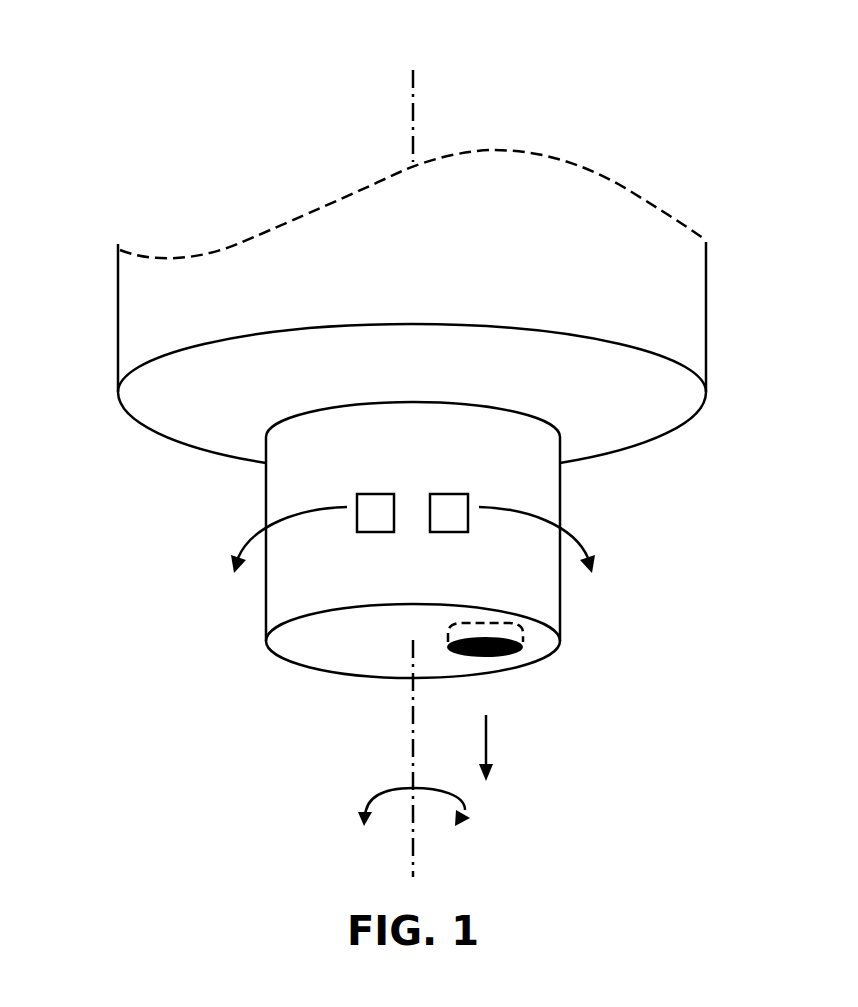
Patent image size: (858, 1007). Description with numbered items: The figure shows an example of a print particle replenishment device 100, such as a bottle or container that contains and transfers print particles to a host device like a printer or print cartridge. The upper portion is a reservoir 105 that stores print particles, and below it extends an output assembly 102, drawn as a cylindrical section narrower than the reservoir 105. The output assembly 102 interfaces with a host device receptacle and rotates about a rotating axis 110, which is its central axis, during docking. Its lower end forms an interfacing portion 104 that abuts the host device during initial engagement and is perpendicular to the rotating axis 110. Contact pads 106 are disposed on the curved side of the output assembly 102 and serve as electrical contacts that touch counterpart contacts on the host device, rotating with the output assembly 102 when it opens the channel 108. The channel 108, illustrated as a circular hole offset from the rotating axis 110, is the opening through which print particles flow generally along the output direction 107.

The print particle replenishment device 100 is at (158, 156).
The output assembly 102 is at (211, 678).
The interfacing portion 104 is at (358, 642).
The reservoir 105 is at (706, 322).
The contact pads 106 is at (376, 494).
The output direction 107 is at (486, 745).
The channel 108 is at (515, 651).
The rotating axis 110 is at (413, 843).